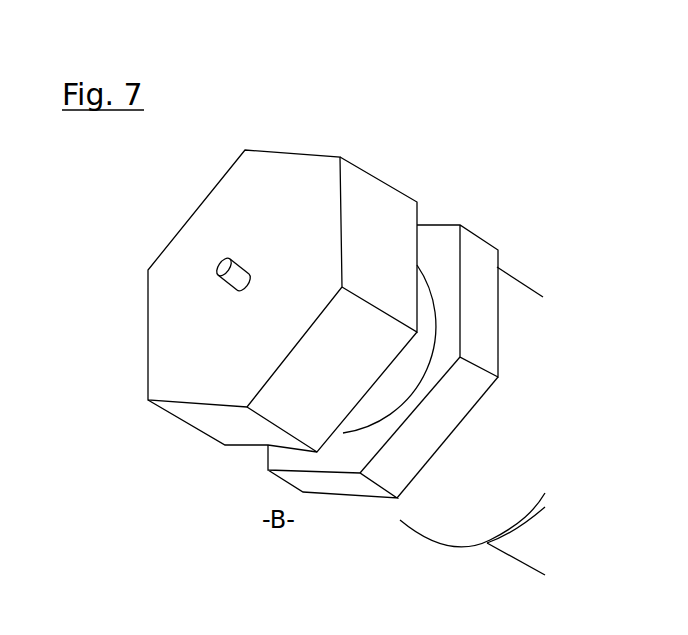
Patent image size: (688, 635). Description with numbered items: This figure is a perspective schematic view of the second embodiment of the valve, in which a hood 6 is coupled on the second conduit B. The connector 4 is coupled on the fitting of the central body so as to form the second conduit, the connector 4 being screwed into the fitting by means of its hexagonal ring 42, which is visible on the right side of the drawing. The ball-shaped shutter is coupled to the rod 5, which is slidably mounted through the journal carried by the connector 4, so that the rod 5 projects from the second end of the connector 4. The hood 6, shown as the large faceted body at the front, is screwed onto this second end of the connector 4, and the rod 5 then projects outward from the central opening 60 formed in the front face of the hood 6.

The hood 6 is at (245, 305).
The central opening 60 is at (243, 304).
The rod 5 is at (228, 280).
The connector 4 is at (487, 336).
The hexagonal ring 42 is at (487, 291).